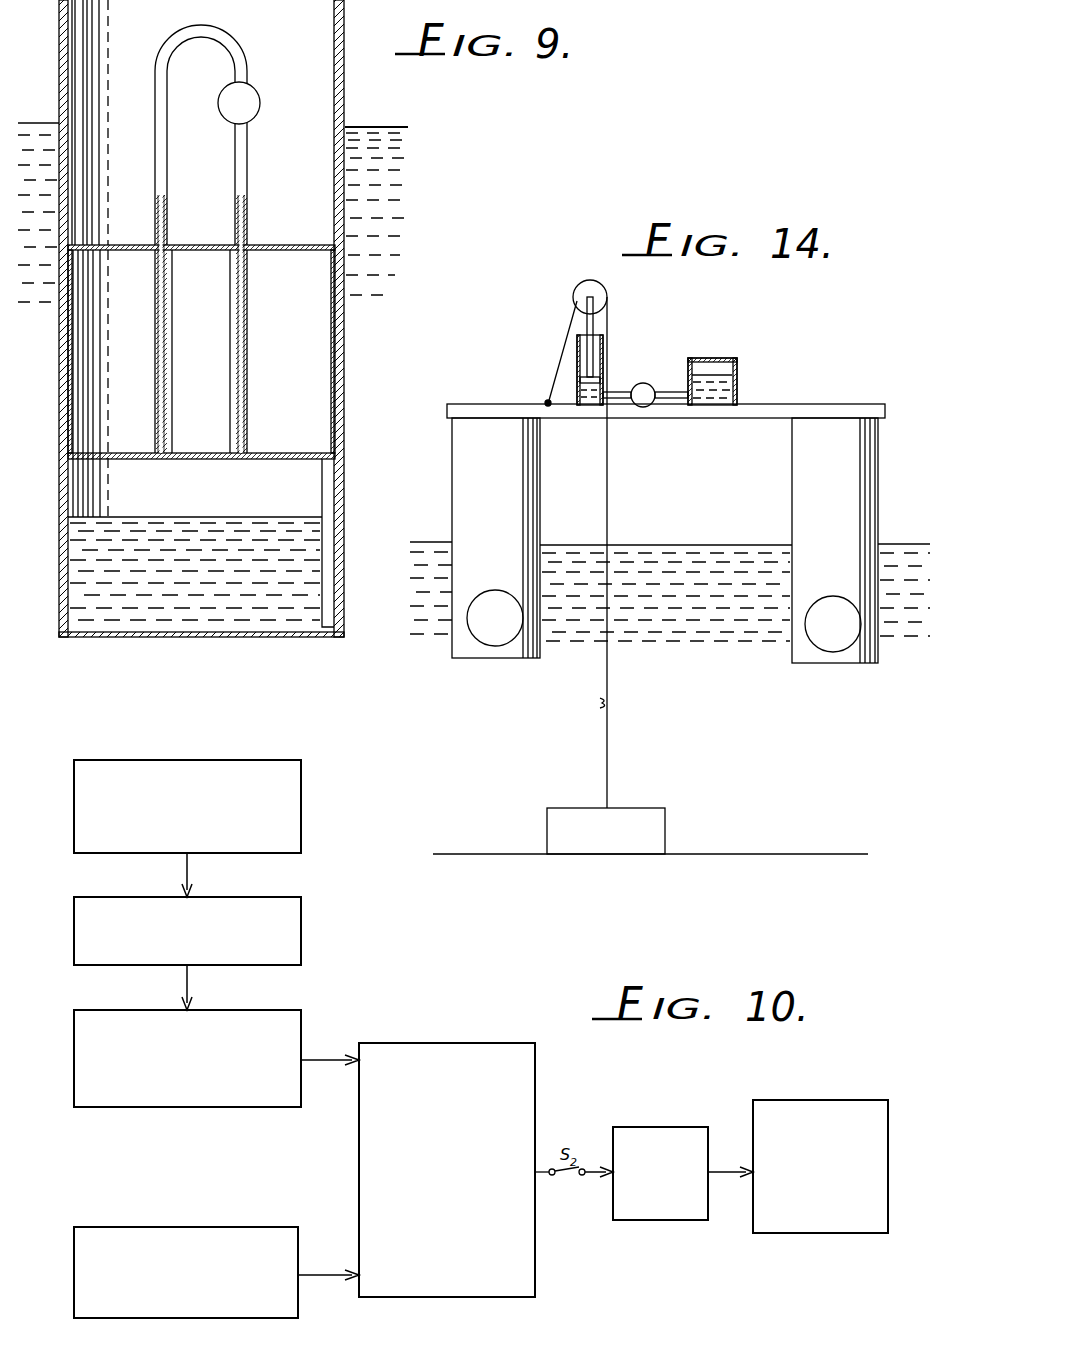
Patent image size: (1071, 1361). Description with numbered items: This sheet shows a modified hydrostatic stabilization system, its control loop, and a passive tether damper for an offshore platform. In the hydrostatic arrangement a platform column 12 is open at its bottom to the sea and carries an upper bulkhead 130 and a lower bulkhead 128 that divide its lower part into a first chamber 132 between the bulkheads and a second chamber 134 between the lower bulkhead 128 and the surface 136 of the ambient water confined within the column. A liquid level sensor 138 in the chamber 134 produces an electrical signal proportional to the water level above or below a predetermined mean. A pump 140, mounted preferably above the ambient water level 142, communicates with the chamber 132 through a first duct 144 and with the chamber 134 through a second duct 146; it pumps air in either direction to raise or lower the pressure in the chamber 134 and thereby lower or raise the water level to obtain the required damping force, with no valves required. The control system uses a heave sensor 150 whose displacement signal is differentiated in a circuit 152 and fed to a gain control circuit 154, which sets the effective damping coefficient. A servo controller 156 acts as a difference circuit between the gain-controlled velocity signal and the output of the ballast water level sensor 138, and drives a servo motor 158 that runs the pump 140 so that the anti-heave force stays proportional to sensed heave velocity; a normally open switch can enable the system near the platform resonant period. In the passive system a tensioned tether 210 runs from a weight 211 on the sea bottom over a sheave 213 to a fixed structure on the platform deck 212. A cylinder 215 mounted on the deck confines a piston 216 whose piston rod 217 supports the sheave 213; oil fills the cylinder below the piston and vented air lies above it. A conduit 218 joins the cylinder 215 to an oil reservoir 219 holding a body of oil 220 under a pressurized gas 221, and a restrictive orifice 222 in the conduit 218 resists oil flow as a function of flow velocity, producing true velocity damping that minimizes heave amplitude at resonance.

In FIG. 9, the column 12 is at (345, 355).
In FIG. 9, the lower bulkhead 128 is at (228, 453).
In FIG. 9, the upper bulkhead 130 is at (265, 245).
In FIG. 9, the first chamber 132 is at (242, 357).
In FIG. 9, the second chamber 134 is at (228, 502).
In FIG. 9, the surface of ambient water 136 is at (236, 517).
In FIG. 9, the liquid level sensor 138 is at (330, 498).
In FIG. 10, the liquid level sensor 138 is at (178, 1227).
In FIG. 9, the pump 140 is at (258, 96).
In FIG. 10, the pump 140 is at (824, 1100).
In FIG. 9, the ambient water level 142 is at (372, 127).
In FIG. 9, the first duct 144 is at (247, 172).
In FIG. 9, the second duct 146 is at (167, 170).
In FIG. 10, the heave sensor 150 is at (204, 760).
In FIG. 10, the differentiating circuit 152 is at (250, 897).
In FIG. 10, the gain control circuit 154 is at (248, 1010).
In FIG. 10, the servo controller 156 is at (446, 1043).
In FIG. 10, the servo motor 158 is at (670, 1127).
In FIG. 14, the tensioned cable or tether 210 is at (612, 715).
In FIG. 14, the weight 211 is at (640, 808).
In FIG. 14, the platform deck 212 is at (476, 382).
In FIG. 14, the sheave 213 is at (604, 304).
In FIG. 14, the cylinder 215 is at (603, 345).
In FIG. 14, the piston 216 is at (580, 380).
In FIG. 14, the piston rod 217 is at (590, 322).
In FIG. 14, the conduit 218 is at (620, 392).
In FIG. 14, the oil reservoir 219 is at (737, 366).
In FIG. 14, the body of oil 220 is at (722, 388).
In FIG. 14, the pressurized gas 221 is at (718, 368).
In FIG. 14, the restrictive orifice 222 is at (636, 388).